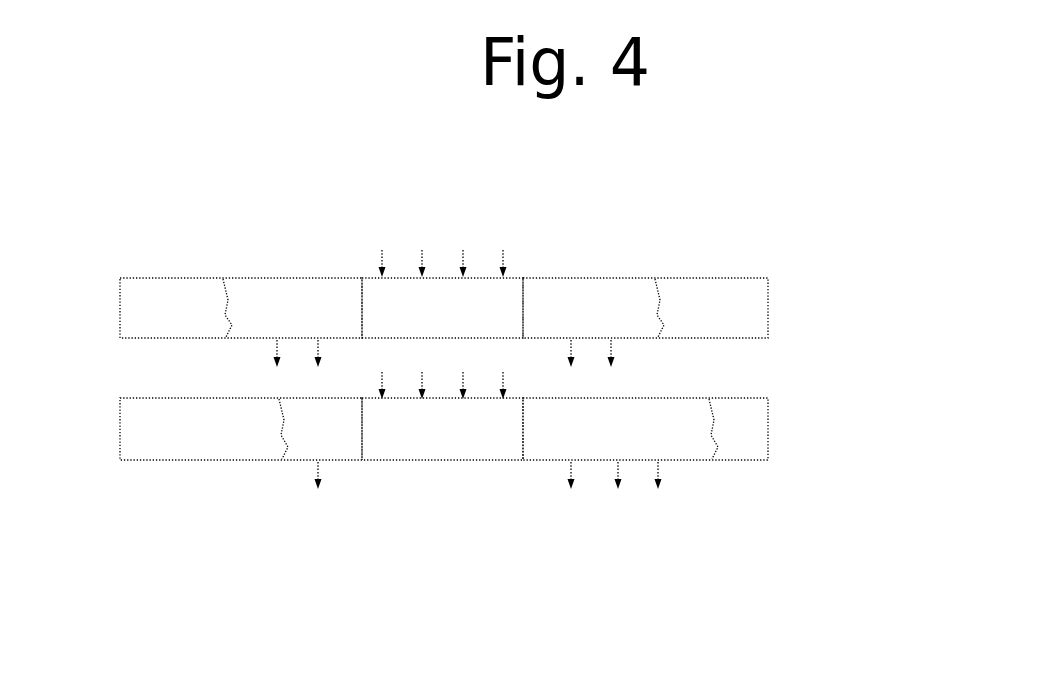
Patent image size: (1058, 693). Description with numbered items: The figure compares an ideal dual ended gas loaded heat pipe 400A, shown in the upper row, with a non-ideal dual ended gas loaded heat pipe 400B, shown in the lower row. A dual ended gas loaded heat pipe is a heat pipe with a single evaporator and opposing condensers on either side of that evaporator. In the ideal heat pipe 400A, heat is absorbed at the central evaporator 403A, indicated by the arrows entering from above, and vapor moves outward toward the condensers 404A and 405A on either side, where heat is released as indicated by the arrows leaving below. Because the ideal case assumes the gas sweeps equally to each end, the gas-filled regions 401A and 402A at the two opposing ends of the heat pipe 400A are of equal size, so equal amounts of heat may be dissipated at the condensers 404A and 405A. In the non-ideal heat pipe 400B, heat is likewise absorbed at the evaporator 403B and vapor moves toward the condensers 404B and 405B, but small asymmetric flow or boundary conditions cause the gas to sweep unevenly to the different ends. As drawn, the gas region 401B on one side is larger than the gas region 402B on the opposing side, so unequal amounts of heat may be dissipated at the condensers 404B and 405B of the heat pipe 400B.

The ideal dual ended gas loaded heat pipe 400A is at (198, 218).
The region 401A is at (143, 277).
The region 402A is at (688, 303).
The evaporator 403A is at (443, 306).
The condenser 404A is at (216, 269).
The condenser 405A is at (565, 303).
The non-ideal dual ended gas loaded heat pipe 400B is at (133, 565).
The region 401B is at (183, 440).
The region 402B is at (733, 440).
The evaporator 403B is at (445, 430).
The condenser 404B is at (320, 435).
The condenser 405B is at (578, 453).